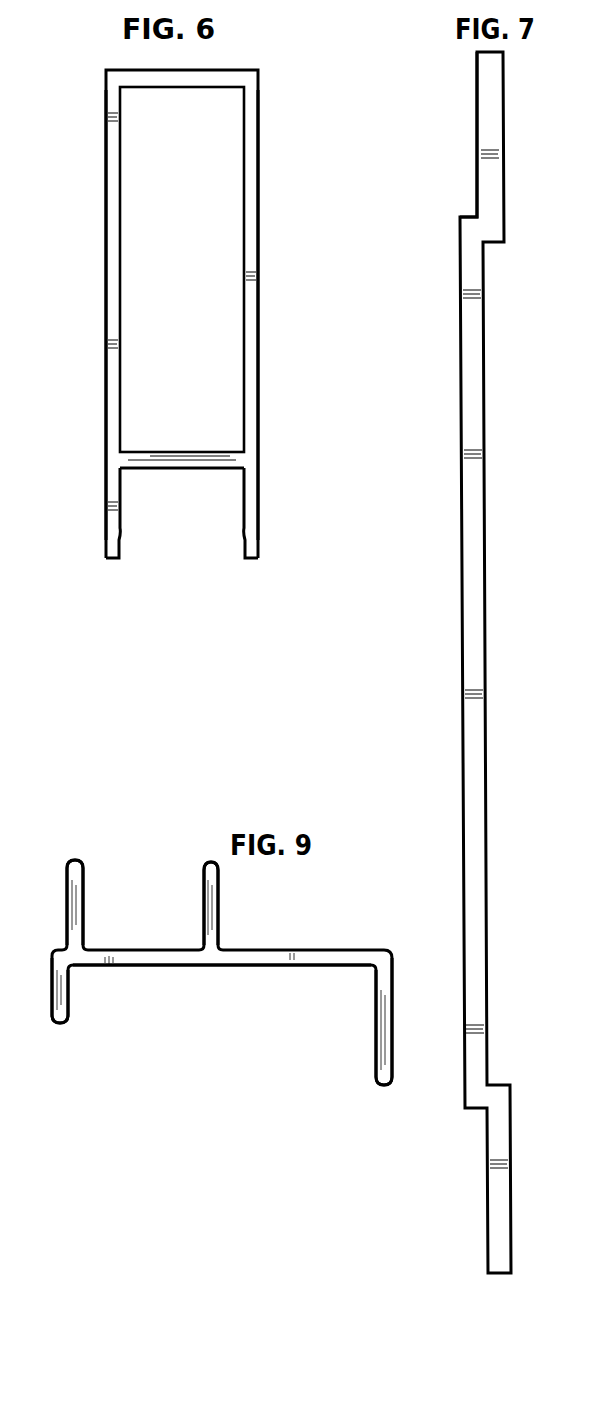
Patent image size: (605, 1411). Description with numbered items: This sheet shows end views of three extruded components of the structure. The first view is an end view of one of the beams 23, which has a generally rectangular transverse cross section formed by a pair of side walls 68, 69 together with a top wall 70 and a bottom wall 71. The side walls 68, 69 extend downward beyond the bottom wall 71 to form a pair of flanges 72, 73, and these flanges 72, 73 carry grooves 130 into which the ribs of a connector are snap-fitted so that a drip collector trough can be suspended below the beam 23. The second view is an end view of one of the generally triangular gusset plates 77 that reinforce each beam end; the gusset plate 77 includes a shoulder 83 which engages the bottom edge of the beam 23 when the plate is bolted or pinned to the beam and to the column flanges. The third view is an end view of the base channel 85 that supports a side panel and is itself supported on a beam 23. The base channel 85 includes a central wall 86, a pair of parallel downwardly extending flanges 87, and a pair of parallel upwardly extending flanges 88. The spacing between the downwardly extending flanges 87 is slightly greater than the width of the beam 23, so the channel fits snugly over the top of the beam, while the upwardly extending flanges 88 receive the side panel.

In FIG. 6, the top wall 70 is at (233, 78).
In FIG. 6, the beam 23 is at (252, 272).
In FIG. 6, the side wall 68 is at (113, 262).
In FIG. 6, the side wall 69 is at (253, 360).
In FIG. 6, the bottom wall 71 is at (183, 465).
In FIG. 6, the flange 72 is at (110, 487).
In FIG. 6, the flange 73 is at (260, 502).
In FIG. 6, the groove 130 is at (118, 535).
In FIG. 7, the gusset plate 77 is at (486, 632).
In FIG. 7, the shoulder 83 is at (462, 214).
In FIG. 9, the base channel 85 is at (338, 953).
In FIG. 9, the central wall 86 is at (273, 962).
In FIG. 9, the downwardly extending flange 87 is at (380, 1058).
In FIG. 9, the upwardly extending flange 88 is at (205, 860).